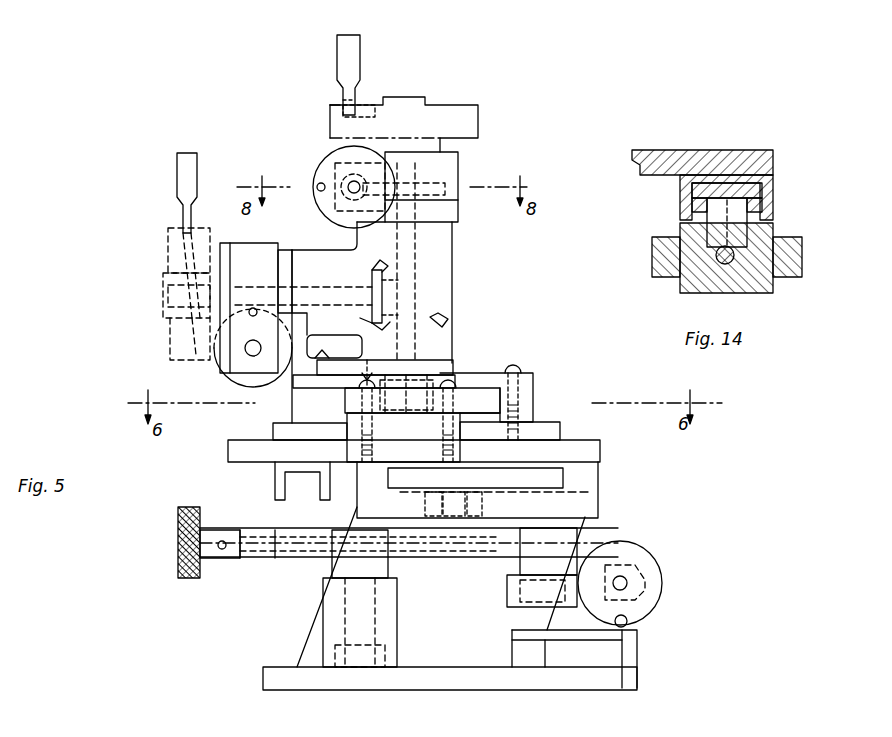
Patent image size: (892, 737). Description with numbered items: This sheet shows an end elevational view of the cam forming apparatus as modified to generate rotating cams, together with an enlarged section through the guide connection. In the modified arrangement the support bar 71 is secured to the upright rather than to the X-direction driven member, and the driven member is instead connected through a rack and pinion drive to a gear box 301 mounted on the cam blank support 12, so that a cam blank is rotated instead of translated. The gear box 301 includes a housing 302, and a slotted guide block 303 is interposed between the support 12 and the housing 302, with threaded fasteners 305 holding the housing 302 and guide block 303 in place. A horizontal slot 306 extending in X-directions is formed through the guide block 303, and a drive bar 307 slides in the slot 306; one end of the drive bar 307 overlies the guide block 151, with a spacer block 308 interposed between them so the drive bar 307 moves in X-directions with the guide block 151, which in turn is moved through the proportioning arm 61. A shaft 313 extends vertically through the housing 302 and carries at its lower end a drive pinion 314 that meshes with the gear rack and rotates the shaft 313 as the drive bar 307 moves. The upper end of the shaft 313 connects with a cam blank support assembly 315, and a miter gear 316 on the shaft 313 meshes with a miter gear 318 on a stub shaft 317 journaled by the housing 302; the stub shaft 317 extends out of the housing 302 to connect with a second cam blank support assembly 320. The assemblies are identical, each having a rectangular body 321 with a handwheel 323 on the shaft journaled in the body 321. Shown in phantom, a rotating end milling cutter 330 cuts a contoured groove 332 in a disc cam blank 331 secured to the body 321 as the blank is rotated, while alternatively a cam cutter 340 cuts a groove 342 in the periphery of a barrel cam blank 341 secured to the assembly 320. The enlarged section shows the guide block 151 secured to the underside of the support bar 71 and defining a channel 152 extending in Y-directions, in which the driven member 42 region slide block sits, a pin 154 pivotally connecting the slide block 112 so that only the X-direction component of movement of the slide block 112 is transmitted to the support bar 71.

In FIG. 5, the rotating end milling cutter 330 is at (362, 50).
In FIG. 5, the contoured groove 332 is at (372, 96).
In FIG. 5, the cam blank 331 is at (470, 118).
In FIG. 5, the cam blank support assembly 315 is at (458, 180).
In FIG. 5, the rectangular body 321 is at (455, 202).
In FIG. 5, the handwheel 323 is at (321, 183).
In FIG. 5, the gear box 301 is at (430, 275).
In FIG. 5, the stub shaft 317 is at (318, 290).
In FIG. 5, the miter gear 316 is at (448, 318).
In FIG. 5, the miter gear 318 is at (368, 320).
In FIG. 5, the housing 302 is at (452, 346).
In FIG. 5, the cam blank support assembly 320 is at (243, 252).
In FIG. 5, the groove 342 is at (194, 366).
In FIG. 5, the cam cutter 340 is at (175, 167).
In FIG. 5, the cam blank 341 is at (170, 240).
In FIG. 5, the threaded fasteners 305 is at (328, 360).
In FIG. 5, the shaft 313 is at (437, 385).
In FIG. 5, the drive pinion 314 is at (440, 394).
In FIG. 5, the slotted guide block 303 is at (533, 395).
In FIG. 5, the horizontal slot 306 is at (452, 410).
In FIG. 5, the spacer block 308 is at (424, 449).
In FIG. 5, the drive bar 307 is at (347, 400).
In FIG. 5, the cam blank support 12 is at (560, 431).
In FIG. 5, the support bar 71 is at (475, 477).
In FIG. 14, the support bar 71 is at (768, 152).
In FIG. 5, the guide block 151 is at (590, 501).
In FIG. 14, the guide block 151 is at (770, 182).
In FIG. 5, the proportioning arm 61 is at (240, 570).
In FIG. 14, the driven member 42 is at (700, 190).
In FIG. 14, the channel 152 is at (690, 206).
In FIG. 14, the pin 154 is at (748, 216).
In FIG. 14, the slide block 112 is at (745, 263).